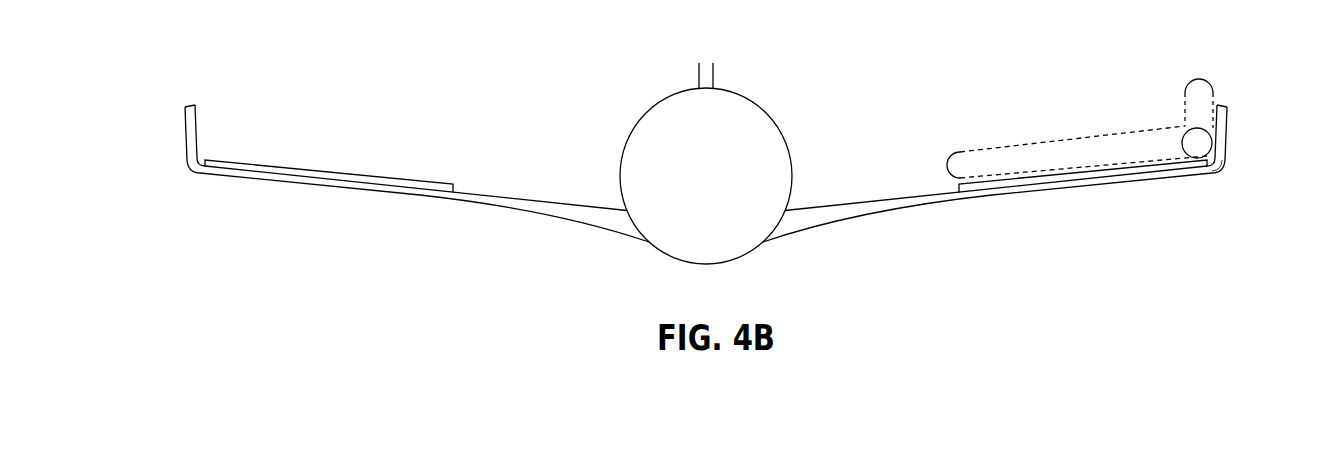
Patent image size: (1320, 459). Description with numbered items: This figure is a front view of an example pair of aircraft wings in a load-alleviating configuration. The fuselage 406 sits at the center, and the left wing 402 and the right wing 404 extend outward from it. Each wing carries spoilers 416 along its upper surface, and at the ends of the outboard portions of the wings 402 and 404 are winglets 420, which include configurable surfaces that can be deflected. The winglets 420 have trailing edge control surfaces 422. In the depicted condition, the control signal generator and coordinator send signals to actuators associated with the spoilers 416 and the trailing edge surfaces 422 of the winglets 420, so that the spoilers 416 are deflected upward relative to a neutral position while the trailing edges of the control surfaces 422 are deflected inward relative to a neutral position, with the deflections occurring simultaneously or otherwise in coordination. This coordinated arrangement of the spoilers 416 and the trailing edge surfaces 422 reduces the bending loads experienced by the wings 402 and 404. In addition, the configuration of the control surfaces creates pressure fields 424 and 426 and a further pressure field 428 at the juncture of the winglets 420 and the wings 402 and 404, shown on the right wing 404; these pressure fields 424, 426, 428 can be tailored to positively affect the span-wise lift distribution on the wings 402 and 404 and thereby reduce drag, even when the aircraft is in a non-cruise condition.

The left wing 402 is at (537, 198).
The right wing 404 is at (864, 203).
The fuselage 406 is at (720, 178).
The spoilers 416 is at (310, 177).
The winglets 420 is at (1226, 166).
The trailing edge control surfaces 422 is at (192, 114).
The pressure field 424 is at (1102, 148).
The pressure field 426 is at (1195, 86).
The pressure field 428 is at (1199, 142).